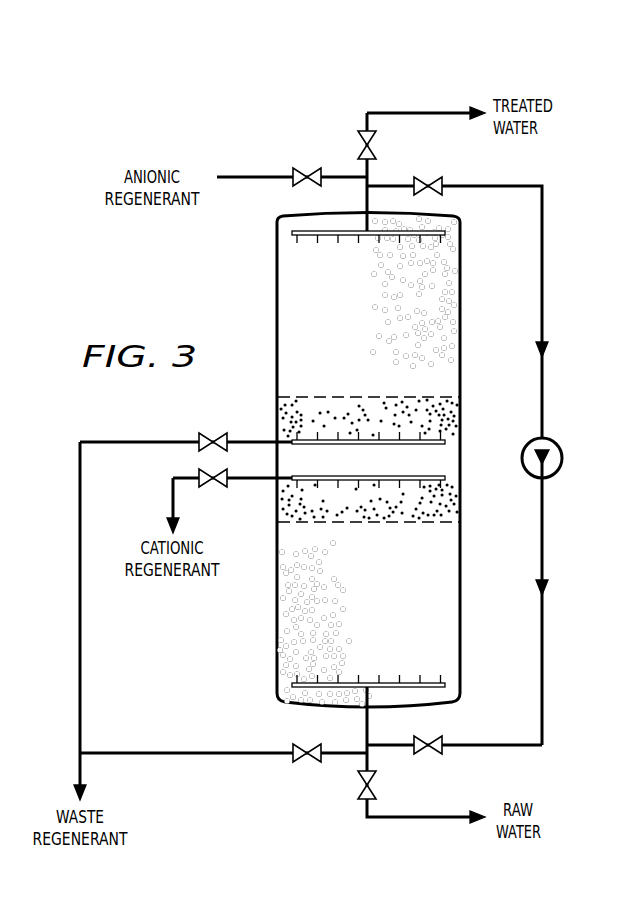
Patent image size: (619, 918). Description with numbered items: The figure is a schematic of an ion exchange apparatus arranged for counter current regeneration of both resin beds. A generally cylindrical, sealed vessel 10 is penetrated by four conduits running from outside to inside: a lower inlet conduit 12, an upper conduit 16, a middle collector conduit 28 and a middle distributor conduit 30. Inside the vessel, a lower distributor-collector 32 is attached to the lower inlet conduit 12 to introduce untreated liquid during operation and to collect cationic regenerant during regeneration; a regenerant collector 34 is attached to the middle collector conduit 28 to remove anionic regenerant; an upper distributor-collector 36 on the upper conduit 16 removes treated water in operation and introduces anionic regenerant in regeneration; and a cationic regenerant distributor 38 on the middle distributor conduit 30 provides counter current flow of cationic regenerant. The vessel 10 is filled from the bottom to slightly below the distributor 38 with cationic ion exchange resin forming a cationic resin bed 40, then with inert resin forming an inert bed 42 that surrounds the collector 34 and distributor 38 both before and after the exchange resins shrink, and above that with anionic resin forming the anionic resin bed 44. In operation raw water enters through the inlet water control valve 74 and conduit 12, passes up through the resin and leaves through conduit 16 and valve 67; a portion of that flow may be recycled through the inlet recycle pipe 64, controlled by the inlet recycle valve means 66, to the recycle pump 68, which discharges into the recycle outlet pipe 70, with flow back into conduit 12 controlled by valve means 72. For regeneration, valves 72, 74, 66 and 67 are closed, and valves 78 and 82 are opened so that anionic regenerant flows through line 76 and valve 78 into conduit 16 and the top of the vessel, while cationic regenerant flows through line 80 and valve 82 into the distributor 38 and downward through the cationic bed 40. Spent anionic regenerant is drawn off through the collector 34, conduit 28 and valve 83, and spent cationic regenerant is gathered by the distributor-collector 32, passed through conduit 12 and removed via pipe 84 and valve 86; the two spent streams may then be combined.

The vessel 10 is at (460, 282).
The lower inlet conduit 12 is at (366, 726).
The upper conduit 16 is at (366, 210).
The middle collector conduit 28 is at (262, 441).
The middle distributor conduit 30 is at (263, 481).
The lower distributor-collector 32 is at (446, 685).
The regenerant collector 34 is at (446, 442).
The upper distributor-collector 36 is at (292, 232).
The cationic regenerant distributor 38 is at (446, 478).
The cationic resin bed 40 is at (380, 599).
The inert resin bed 42 is at (380, 424).
The anionic resin bed 44 is at (380, 338).
The inlet recycle pipe 64 is at (544, 258).
The inlet recycle valve means 66 is at (432, 180).
The valve 67 is at (362, 143).
The recycle pump 68 is at (557, 448).
The recycle outlet pipe 70 is at (544, 652).
The valve means 72 is at (442, 745).
The inlet water control valve 74 is at (373, 786).
The anionic regenerant line 76 is at (241, 180).
The valve 78 is at (306, 170).
The cationic regenerant line 80 is at (171, 483).
The valve 82 is at (212, 486).
The valve 83 is at (211, 438).
The waste pipe 84 is at (340, 755).
The valve 86 is at (290, 756).